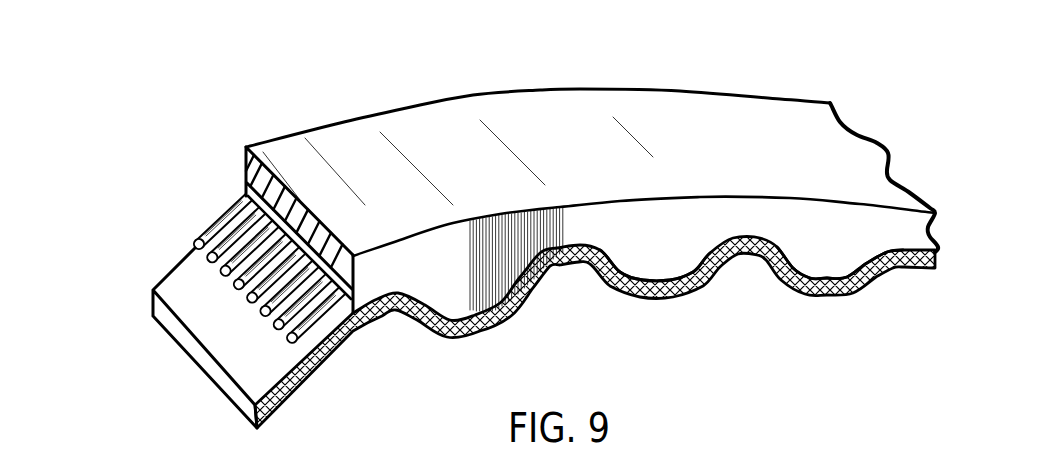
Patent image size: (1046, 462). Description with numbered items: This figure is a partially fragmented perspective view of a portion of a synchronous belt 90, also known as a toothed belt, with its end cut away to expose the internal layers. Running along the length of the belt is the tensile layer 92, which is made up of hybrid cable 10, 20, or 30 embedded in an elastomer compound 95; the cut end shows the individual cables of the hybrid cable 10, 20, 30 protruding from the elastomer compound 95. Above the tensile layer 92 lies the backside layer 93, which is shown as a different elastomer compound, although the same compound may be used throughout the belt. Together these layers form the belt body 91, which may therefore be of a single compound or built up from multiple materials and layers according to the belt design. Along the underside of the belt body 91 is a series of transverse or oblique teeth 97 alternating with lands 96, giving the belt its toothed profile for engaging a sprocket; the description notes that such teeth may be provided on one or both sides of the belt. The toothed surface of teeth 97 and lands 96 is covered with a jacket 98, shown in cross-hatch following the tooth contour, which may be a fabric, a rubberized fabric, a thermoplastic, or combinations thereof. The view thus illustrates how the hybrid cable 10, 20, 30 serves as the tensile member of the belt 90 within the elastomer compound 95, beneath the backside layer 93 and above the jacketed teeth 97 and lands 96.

The synchronous belt 90 is at (413, 72).
The belt body 91 is at (449, 287).
The tensile layer 92 is at (233, 184).
The backside layer 93 is at (252, 158).
The elastomer compound 95 is at (203, 214).
The lands 96 is at (564, 268).
The teeth 97 is at (658, 299).
The jacket 98 is at (872, 282).
The hybrid cable 10 is at (225, 298).
The hybrid cable 20 is at (275, 276).
The hybrid cable 30 is at (309, 309).